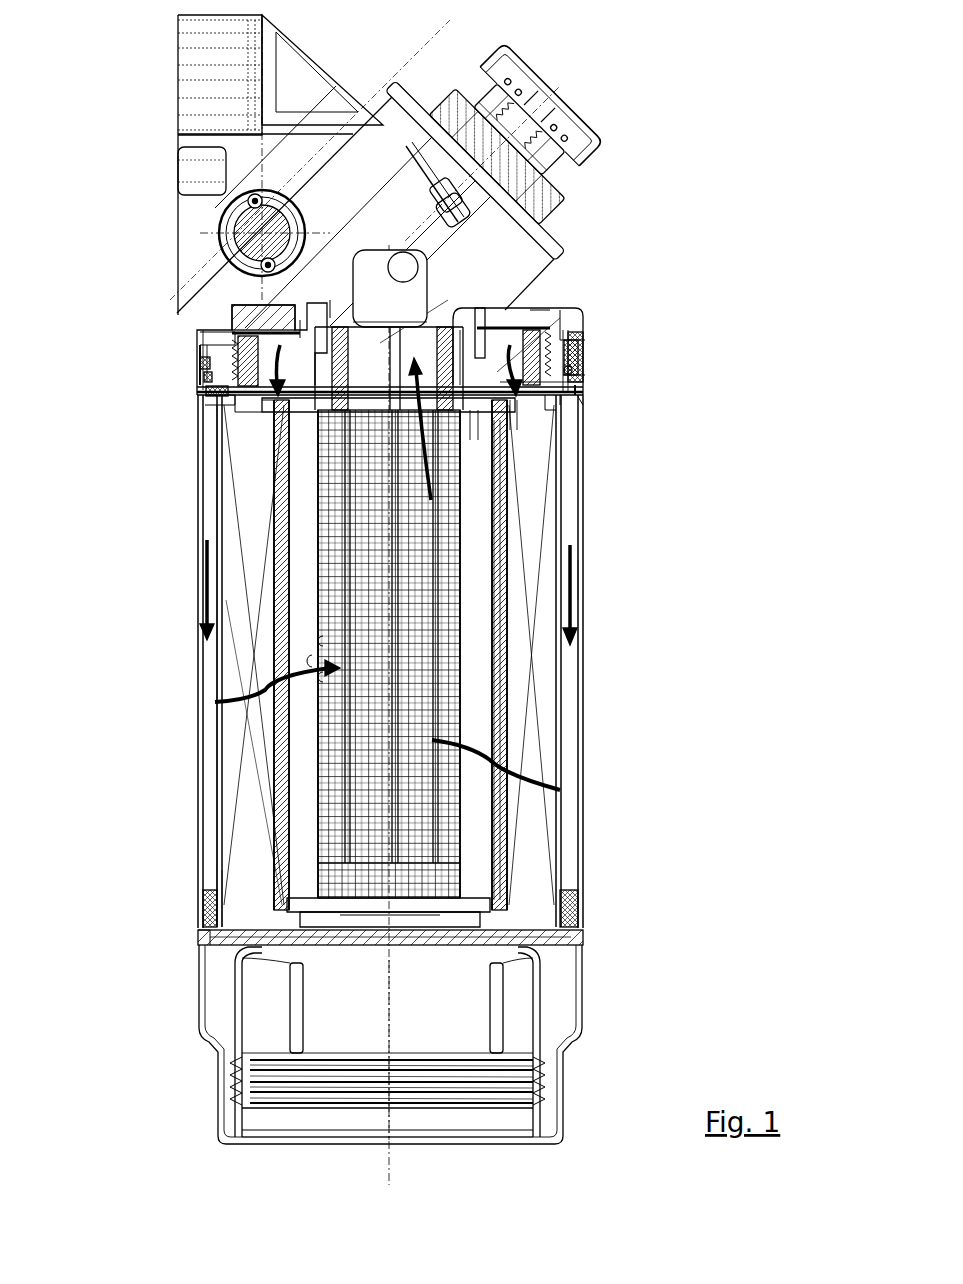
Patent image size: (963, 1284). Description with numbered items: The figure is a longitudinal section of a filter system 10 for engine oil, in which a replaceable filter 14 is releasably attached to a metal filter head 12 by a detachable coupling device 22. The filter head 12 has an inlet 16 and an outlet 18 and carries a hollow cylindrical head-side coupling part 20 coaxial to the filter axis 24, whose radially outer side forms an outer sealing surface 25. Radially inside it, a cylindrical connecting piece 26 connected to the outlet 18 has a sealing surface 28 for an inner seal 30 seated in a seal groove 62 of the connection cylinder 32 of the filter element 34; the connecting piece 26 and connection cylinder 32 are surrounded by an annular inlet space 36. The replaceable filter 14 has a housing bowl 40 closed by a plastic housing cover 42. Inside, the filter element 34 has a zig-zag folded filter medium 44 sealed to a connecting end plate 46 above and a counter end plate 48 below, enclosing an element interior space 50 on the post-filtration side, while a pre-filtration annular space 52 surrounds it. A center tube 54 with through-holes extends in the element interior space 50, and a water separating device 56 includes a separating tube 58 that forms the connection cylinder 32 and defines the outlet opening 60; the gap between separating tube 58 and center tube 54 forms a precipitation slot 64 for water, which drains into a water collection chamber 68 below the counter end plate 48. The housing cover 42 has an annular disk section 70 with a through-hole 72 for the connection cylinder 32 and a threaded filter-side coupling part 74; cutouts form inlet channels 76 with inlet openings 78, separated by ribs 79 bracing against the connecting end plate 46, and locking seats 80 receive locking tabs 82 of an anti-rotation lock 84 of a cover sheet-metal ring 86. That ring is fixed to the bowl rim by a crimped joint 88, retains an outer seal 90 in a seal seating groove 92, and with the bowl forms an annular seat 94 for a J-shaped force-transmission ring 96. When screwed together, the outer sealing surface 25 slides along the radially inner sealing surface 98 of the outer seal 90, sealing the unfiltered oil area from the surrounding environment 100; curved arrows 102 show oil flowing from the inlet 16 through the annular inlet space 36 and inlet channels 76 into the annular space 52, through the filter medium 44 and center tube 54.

The filter system 10 is at (98, 66).
The filter head 12 is at (172, 78).
The replaceable filter 14 is at (197, 824).
The inlet 16 is at (222, 335).
The outlet 18 is at (405, 295).
The head-side coupling part 20 is at (212, 392).
The coupling device 22 is at (215, 358).
The filter axis 24 is at (390, 1025).
The outer sealing surface 25 is at (205, 363).
The connecting piece 26 is at (308, 320).
The sealing surface 28 is at (258, 328).
The inner seal 30 is at (335, 300).
The connection cylinder 32 is at (240, 410).
The filter element 34 is at (212, 744).
The annular inlet space 36 is at (212, 342).
The housing bowl 40 is at (200, 698).
The housing cover 42 is at (540, 312).
The filter medium 44 is at (243, 898).
The connecting end plate 46 is at (215, 405).
The counter end plate 48 is at (205, 925).
The element interior space 50 is at (478, 828).
The annular space 52 is at (570, 868).
The center tube 54 is at (500, 727).
The water separating device 56 is at (305, 765).
The separating tube 58 is at (328, 642).
The outlet opening 60 is at (389, 368).
The seal groove 62 is at (460, 328).
The precipitation slot 64 is at (478, 676).
The water collection chamber 68 is at (390, 1044).
The annular disk section 70 is at (565, 402).
The through-hole 72 is at (262, 412).
The filter-side coupling part 74 is at (532, 330).
The inlet channels 76 is at (568, 485).
The inlet openings 78 is at (518, 405).
The ribs 79 is at (480, 440).
The locking seats 80 is at (583, 391).
The locking tabs 82 is at (575, 402).
The anti-rotation lock 84 is at (580, 398).
The cover sheet-metal ring 86 is at (575, 356).
The crimped joint 88 is at (585, 338).
The outer seal 90 is at (545, 371).
The seal seating groove 92 is at (580, 378).
The annular seat 94 is at (205, 370).
The force-transmission ring 96 is at (200, 377).
The radially inner sealing surface 98 is at (460, 358).
The surrounding environment 100 is at (653, 580).
The curved arrows 102 is at (560, 790).